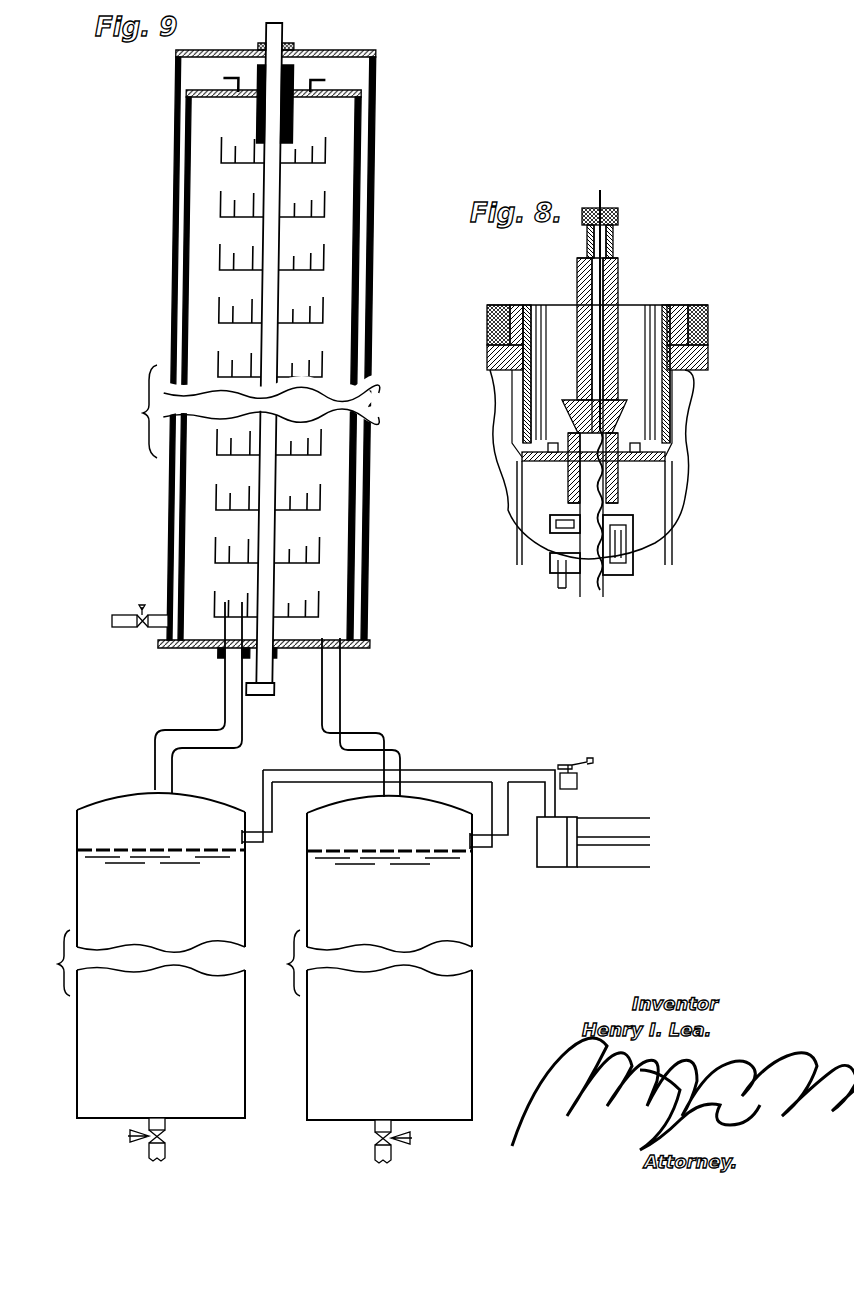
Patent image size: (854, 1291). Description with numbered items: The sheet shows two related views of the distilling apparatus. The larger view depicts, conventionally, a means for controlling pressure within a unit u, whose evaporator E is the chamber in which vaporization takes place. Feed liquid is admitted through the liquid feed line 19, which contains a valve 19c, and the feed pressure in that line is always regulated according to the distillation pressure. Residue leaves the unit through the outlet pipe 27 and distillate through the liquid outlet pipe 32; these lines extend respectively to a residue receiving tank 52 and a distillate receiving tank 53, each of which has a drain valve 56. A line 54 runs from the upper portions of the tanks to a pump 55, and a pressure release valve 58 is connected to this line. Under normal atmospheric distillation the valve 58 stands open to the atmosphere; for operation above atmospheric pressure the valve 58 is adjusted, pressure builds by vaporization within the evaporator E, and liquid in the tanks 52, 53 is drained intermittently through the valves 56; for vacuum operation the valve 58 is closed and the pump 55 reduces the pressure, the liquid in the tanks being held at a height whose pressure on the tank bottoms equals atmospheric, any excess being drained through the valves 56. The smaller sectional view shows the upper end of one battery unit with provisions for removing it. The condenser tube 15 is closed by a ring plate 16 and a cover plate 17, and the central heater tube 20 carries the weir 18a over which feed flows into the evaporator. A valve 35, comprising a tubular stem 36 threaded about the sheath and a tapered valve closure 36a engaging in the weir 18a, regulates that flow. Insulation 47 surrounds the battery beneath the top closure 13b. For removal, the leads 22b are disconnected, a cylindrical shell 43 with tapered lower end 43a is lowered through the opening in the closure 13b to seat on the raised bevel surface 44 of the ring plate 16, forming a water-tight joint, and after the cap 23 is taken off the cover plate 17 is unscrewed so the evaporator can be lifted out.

In FIG. 9, the unit u is at (373, 241).
In FIG. 9, the evaporator E is at (328, 318).
In FIG. 9, the liquid feed line 19 is at (134, 616).
In FIG. 9, the valve 19c is at (142, 628).
In FIG. 9, the outlet pipe 27 is at (225, 670).
In FIG. 9, the liquid outlet pipe 32 is at (340, 670).
In FIG. 9, the residue receiving tank 52 is at (151, 955).
In FIG. 9, the distillate receiving tank 53 is at (380, 958).
In FIG. 9, the line 54 is at (478, 757).
In FIG. 9, the pump 55 is at (580, 862).
In FIG. 9, the drain valves 56 is at (167, 1138).
In FIG. 9, the pressure release valve 58 is at (585, 781).
In FIG. 8, the leads 22b is at (603, 205).
In FIG. 8, the cap 23 is at (618, 220).
In FIG. 8, the valve 35 is at (663, 306).
In FIG. 8, the insulation 47 is at (498, 305).
In FIG. 8, the top closure 13b is at (487, 357).
In FIG. 8, the tubular stem 36 is at (607, 357).
In FIG. 8, the tapered valve closure 36a is at (570, 420).
In FIG. 8, the cylindrical shell 43 is at (512, 412).
In FIG. 8, the tapered lower end 43a is at (522, 455).
In FIG. 8, the raised bevel surface 44 is at (672, 455).
In FIG. 8, the cover plate 17 is at (625, 462).
In FIG. 8, the ring plate 16 is at (670, 478).
In FIG. 8, the weir 18a is at (568, 482).
In FIG. 8, the heater tube 20 is at (607, 517).
In FIG. 8, the condenser tube 15 is at (516, 525).